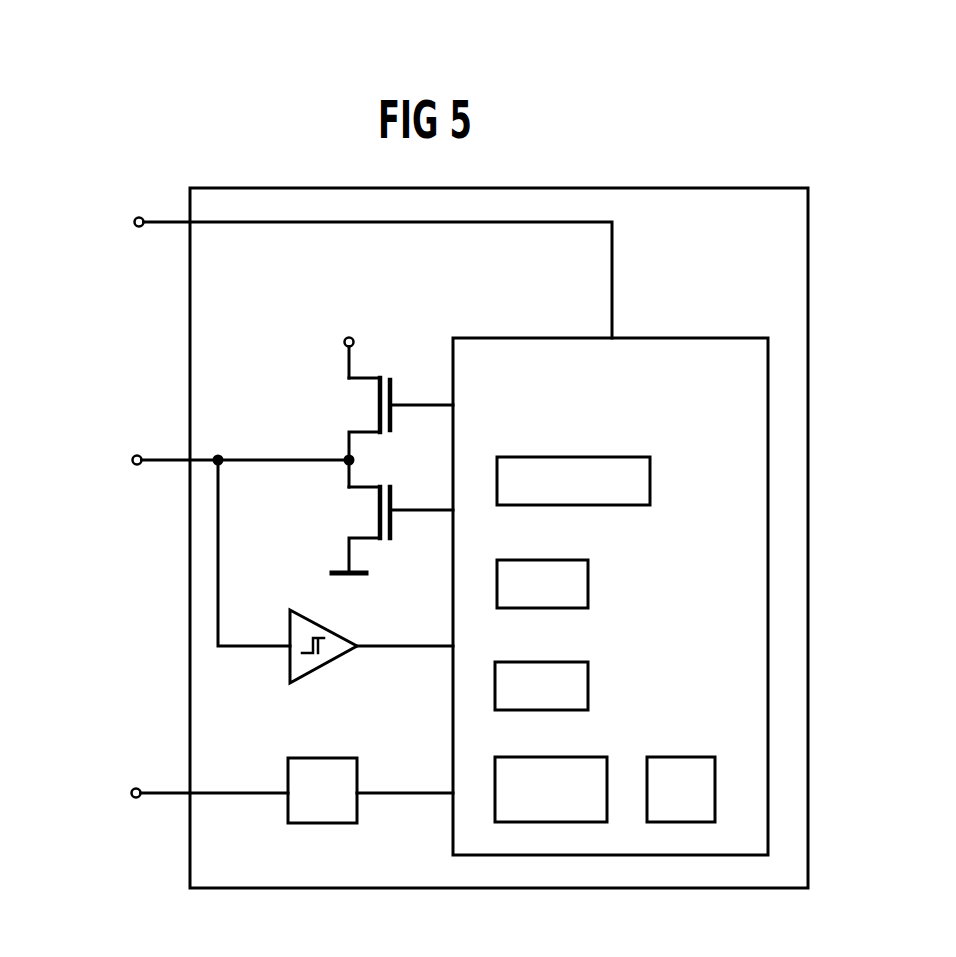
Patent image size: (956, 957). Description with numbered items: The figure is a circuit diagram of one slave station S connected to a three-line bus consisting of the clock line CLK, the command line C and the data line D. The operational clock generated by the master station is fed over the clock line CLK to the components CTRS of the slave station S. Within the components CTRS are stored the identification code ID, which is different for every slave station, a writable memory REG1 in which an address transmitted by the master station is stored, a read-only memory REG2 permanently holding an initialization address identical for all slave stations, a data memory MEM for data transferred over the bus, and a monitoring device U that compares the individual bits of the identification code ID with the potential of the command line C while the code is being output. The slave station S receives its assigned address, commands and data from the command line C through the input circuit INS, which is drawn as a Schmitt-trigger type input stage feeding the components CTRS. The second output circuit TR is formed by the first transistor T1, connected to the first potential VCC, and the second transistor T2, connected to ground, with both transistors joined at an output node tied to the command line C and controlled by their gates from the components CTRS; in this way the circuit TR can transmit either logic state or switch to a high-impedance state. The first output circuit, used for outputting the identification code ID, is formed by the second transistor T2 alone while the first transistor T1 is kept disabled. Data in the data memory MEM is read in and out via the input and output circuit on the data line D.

The clock line CLK is at (344, 271).
The command line C is at (231, 459).
The data line D is at (198, 794).
The slave station S is at (186, 683).
The second output circuit TR is at (402, 291).
The first potential VCC is at (349, 338).
The first transistor T1 is at (360, 407).
The second transistor T2 is at (364, 512).
The input circuit INS is at (318, 668).
The components CTRS is at (610, 596).
The identification code ID is at (573, 481).
The memory REG1 is at (542, 584).
The read-only memory REG2 is at (541, 686).
The data memory MEM is at (551, 789).
The monitoring device U is at (681, 789).